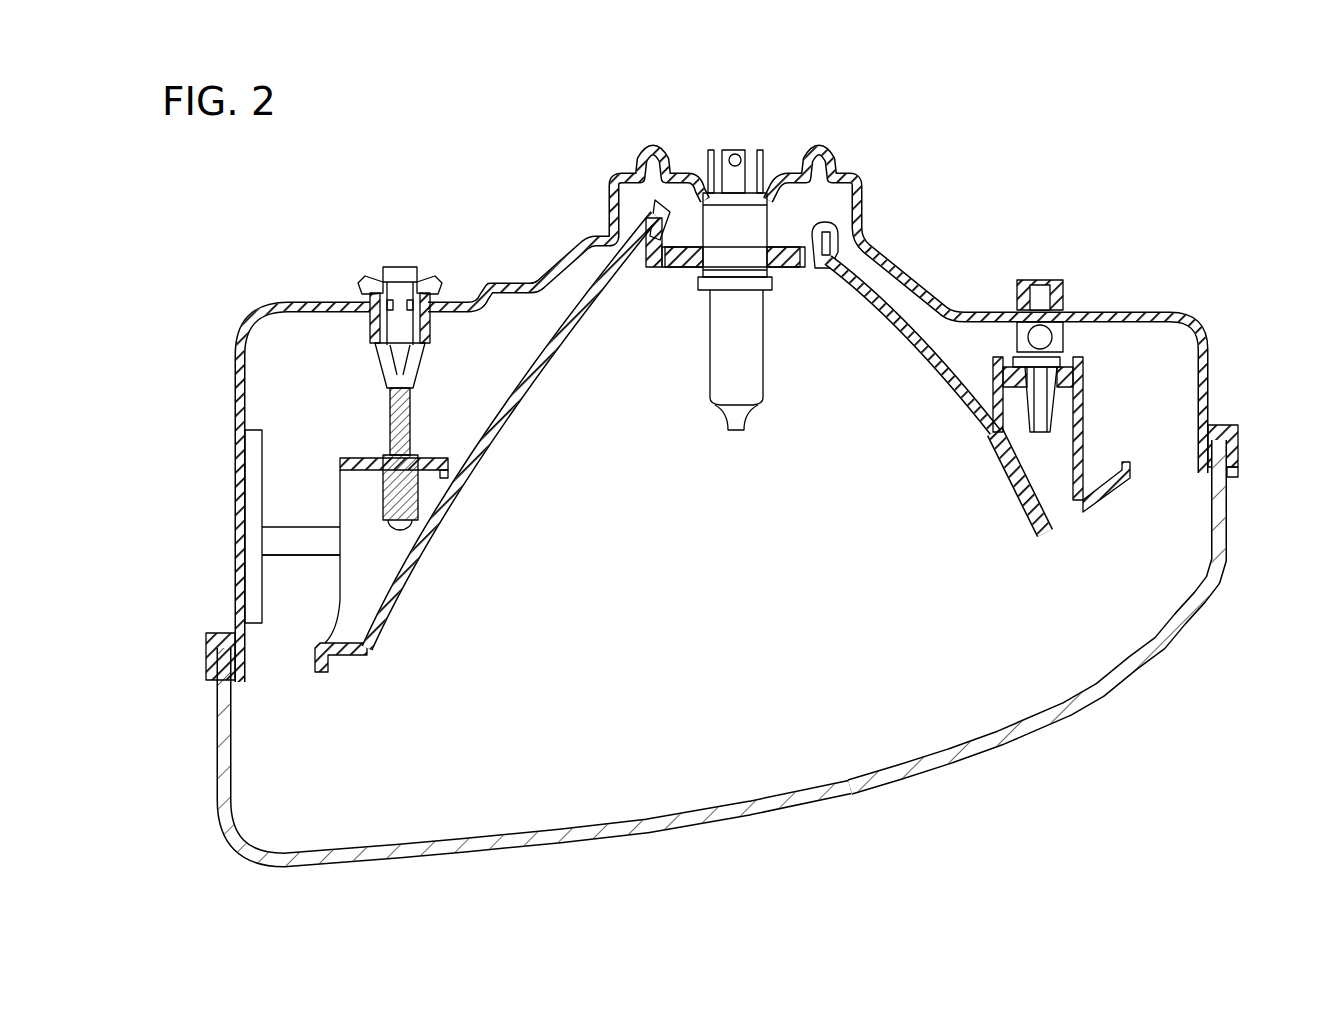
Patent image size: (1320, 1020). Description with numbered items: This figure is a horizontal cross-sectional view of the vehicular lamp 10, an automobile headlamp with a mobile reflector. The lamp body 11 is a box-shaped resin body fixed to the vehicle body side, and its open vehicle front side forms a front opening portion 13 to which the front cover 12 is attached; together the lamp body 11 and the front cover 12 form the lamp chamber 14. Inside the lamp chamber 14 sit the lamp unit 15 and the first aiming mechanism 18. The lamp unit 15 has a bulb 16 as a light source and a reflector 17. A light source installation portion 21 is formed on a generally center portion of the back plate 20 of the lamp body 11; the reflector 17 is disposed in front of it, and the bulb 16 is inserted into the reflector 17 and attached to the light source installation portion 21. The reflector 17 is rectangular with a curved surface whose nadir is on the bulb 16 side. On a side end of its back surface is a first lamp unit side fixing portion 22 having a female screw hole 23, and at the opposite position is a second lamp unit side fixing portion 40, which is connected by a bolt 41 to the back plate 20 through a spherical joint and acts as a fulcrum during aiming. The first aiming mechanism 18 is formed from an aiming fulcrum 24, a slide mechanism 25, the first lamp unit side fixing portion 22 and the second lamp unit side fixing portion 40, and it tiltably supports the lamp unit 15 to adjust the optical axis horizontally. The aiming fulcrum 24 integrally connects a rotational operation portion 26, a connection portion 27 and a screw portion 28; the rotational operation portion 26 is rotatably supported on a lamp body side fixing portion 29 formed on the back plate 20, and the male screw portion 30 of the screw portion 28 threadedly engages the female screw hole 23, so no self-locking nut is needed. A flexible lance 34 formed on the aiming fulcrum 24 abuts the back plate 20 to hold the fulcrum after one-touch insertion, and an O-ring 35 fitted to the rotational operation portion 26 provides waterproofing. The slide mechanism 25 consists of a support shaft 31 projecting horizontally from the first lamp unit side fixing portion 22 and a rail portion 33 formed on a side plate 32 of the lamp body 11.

The vehicular lamp 10 is at (1020, 163).
The lamp body 11 is at (1163, 311).
The front cover 12 is at (830, 800).
The front opening portion 13 is at (245, 684).
The lamp chamber 14 is at (467, 790).
The lamp unit 15 is at (845, 452).
The bulb 16 is at (745, 438).
The reflector 17 is at (1050, 535).
The first aiming mechanism 18 is at (483, 263).
The back plate 20 is at (925, 275).
The light source installation portion 21 is at (770, 200).
The first lamp unit side fixing portion 22 is at (447, 457).
The female screw hole 23 is at (432, 460).
The aiming fulcrum 24 is at (370, 290).
The slide mechanism 25 is at (285, 527).
The rotational operation portion 26 is at (400, 268).
The connection portion 27 is at (390, 425).
The screw portion 28 is at (383, 495).
The lamp body side fixing portion 29 is at (430, 325).
The male screw portion 30 is at (418, 495).
The support shaft 31 is at (313, 555).
The side plate 32 is at (250, 325).
The rail portion 33 is at (256, 452).
The lance 34 is at (380, 355).
The O-ring 35 is at (430, 293).
The second lamp unit side fixing portion 40 is at (1085, 430).
The bolt 41 is at (1040, 417).